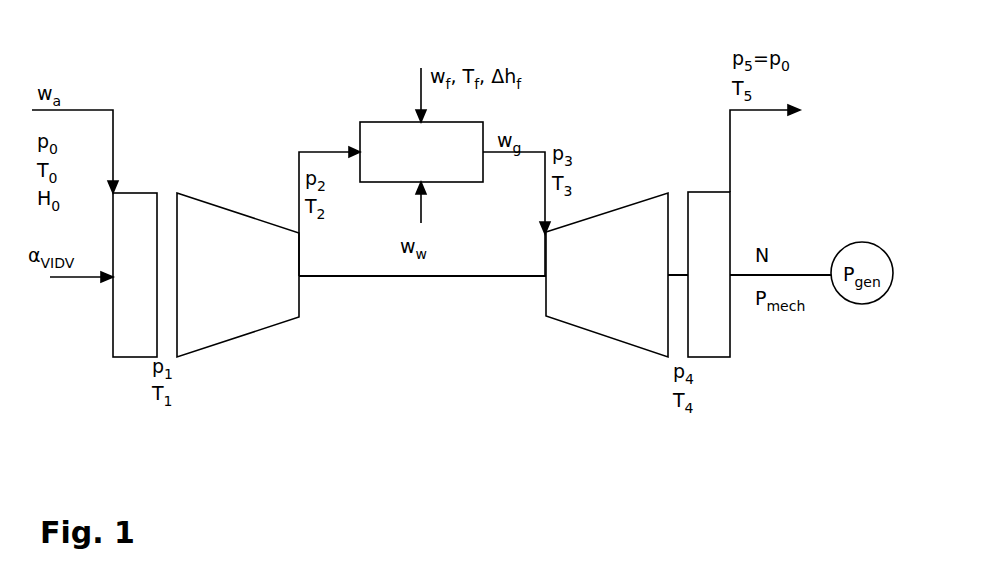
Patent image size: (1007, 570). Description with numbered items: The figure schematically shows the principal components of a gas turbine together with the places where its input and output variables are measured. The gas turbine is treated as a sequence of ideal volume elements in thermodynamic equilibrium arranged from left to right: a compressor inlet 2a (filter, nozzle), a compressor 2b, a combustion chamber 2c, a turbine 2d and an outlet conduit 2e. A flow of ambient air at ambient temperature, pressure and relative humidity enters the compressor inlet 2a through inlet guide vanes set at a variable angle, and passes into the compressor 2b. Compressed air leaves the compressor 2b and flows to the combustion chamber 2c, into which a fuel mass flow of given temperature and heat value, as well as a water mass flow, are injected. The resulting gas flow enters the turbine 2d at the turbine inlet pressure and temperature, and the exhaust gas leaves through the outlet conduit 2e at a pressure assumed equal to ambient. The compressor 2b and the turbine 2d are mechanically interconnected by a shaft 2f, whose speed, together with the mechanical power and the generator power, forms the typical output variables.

The compressor inlet 2a is at (130, 203).
The compressor 2b is at (222, 227).
The combustion chamber 2c is at (383, 130).
The turbine 2d is at (640, 213).
The outlet conduit 2e is at (700, 198).
The shaft 2f is at (440, 276).